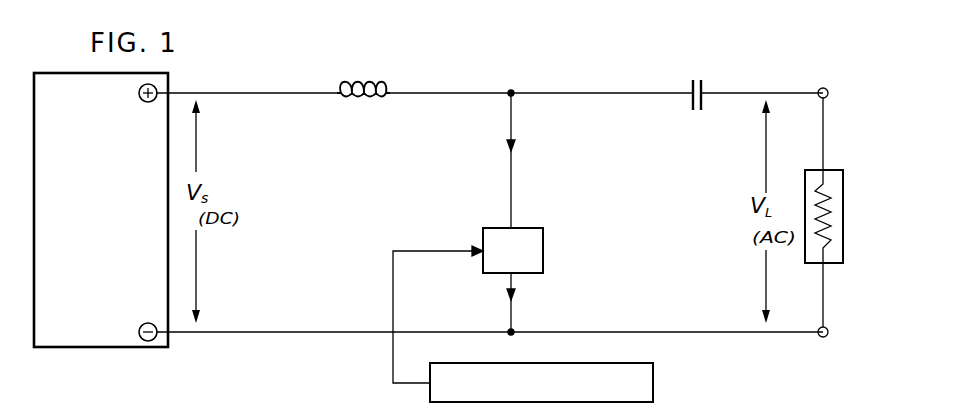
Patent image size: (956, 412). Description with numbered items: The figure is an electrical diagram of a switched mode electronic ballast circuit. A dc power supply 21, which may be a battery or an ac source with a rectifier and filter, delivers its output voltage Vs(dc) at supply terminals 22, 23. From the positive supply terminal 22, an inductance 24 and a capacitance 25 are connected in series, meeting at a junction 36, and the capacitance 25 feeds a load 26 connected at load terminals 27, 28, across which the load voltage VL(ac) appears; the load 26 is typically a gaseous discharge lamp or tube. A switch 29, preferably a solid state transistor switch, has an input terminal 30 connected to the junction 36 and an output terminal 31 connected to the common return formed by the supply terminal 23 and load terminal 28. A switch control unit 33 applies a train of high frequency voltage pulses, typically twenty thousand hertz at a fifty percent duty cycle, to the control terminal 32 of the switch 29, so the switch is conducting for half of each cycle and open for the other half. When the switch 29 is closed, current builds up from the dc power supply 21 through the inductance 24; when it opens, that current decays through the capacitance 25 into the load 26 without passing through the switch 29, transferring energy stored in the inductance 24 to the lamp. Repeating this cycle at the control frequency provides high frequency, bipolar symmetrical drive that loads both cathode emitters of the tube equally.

The dc power supply 21 is at (34, 158).
The supply terminal 22 is at (157, 89).
The supply terminal 23 is at (152, 341).
The inductance 24 is at (378, 87).
The capacitance 25 is at (704, 89).
The load 26 is at (845, 172).
The load terminal 27 is at (828, 88).
The load terminal 28 is at (822, 338).
The switch 29 is at (545, 232).
The input terminal 30 is at (510, 173).
The output terminal 31 is at (511, 312).
The control terminal 32 is at (422, 250).
The switch control unit 33 is at (656, 377).
The junction 36 is at (514, 90).